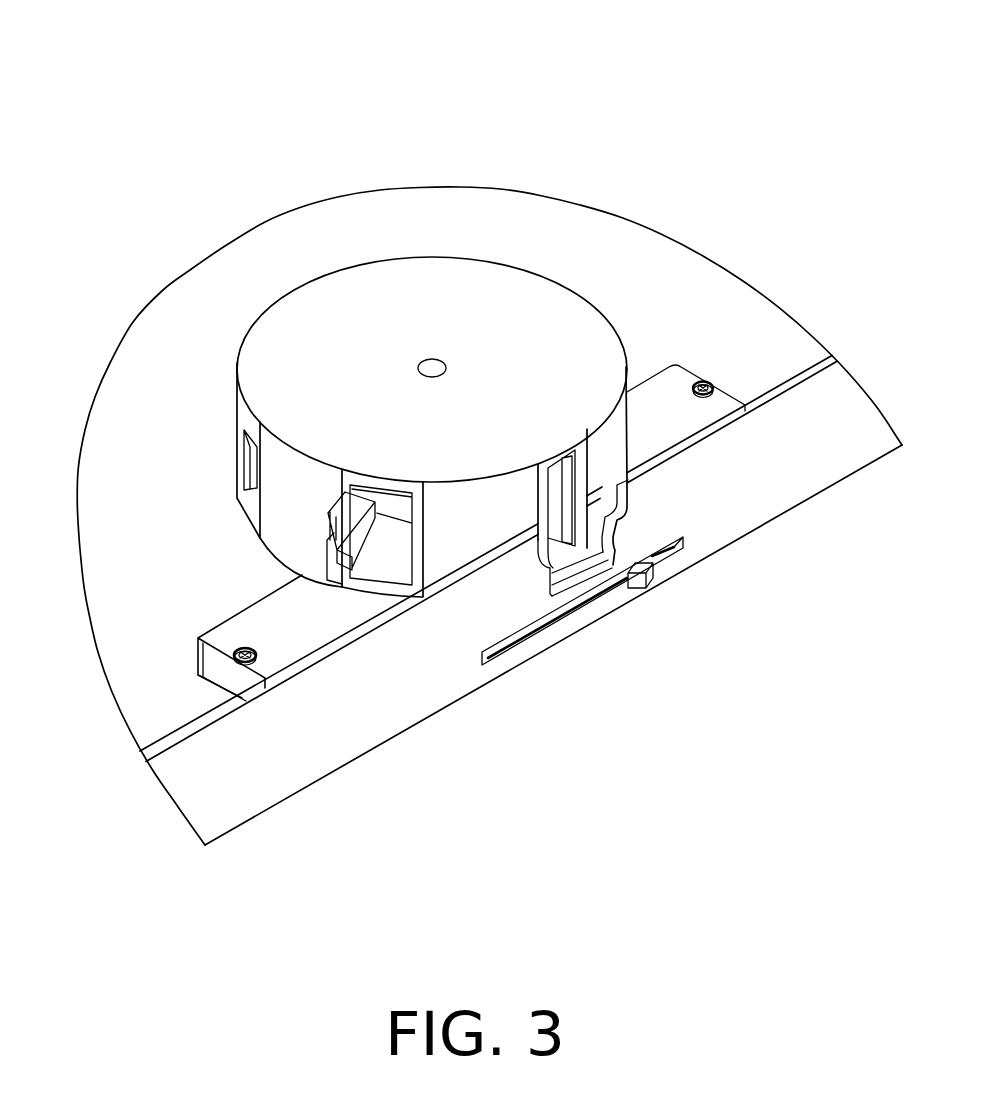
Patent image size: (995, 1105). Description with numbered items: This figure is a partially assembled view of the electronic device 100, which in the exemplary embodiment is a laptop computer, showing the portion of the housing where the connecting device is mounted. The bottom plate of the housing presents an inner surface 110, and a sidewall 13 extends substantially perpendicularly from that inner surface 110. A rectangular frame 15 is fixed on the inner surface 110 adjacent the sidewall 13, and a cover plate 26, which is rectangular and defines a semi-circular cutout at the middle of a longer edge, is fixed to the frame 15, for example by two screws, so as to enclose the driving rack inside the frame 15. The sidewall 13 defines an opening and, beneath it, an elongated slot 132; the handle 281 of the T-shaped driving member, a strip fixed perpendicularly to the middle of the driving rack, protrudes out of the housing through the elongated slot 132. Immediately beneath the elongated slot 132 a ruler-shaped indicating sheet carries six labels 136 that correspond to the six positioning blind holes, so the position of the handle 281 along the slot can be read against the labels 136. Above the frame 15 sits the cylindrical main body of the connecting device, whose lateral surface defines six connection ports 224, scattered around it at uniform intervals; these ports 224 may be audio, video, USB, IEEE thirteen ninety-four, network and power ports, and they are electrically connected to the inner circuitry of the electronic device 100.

The electronic device 100 is at (265, 78).
The inner surface 110 is at (177, 337).
The sidewall 13 is at (248, 785).
The rectangular frame 15 is at (220, 675).
The cover plate 26 is at (248, 622).
The elongated slot 132 is at (495, 652).
The labels 136 is at (570, 633).
The connection ports 224 is at (383, 562).
The handle 281 is at (643, 573).